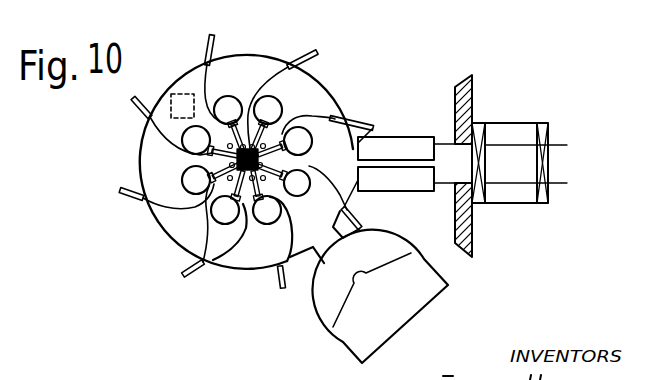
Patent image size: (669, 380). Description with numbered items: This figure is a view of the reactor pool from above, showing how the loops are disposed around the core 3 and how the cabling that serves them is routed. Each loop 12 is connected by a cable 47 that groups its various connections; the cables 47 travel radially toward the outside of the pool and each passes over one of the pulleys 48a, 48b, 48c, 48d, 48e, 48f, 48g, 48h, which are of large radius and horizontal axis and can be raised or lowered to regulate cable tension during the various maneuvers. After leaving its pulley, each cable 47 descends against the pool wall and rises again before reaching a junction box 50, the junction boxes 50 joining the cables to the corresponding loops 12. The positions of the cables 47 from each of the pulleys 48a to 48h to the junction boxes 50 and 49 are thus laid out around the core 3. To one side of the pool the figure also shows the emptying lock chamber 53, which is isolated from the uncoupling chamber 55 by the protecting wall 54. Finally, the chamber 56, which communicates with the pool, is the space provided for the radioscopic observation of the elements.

The core 3 is at (257, 142).
The loop 12 is at (297, 183).
The cable 47 is at (226, 265).
The pulley 48a is at (318, 52).
The pulley 48b is at (230, 69).
The pulley 48c is at (160, 116).
The pulley 48d is at (147, 193).
The pulley 48e is at (174, 238).
The pulley 48f is at (267, 289).
The pulley 48g is at (356, 202).
The pulley 48h is at (347, 125).
The terminal contact 49 is at (245, 220).
The junction box 50 is at (213, 218).
The emptying lock chamber 53 is at (413, 159).
The protecting wall 54 is at (468, 106).
The uncoupling chamber 55 is at (520, 132).
The chamber 56 is at (402, 315).